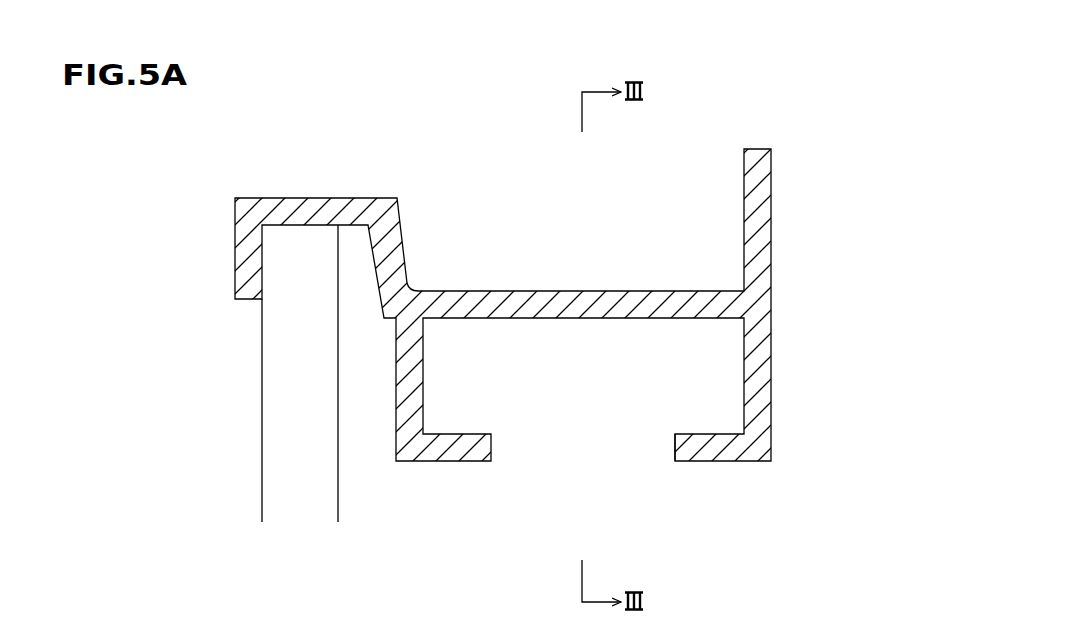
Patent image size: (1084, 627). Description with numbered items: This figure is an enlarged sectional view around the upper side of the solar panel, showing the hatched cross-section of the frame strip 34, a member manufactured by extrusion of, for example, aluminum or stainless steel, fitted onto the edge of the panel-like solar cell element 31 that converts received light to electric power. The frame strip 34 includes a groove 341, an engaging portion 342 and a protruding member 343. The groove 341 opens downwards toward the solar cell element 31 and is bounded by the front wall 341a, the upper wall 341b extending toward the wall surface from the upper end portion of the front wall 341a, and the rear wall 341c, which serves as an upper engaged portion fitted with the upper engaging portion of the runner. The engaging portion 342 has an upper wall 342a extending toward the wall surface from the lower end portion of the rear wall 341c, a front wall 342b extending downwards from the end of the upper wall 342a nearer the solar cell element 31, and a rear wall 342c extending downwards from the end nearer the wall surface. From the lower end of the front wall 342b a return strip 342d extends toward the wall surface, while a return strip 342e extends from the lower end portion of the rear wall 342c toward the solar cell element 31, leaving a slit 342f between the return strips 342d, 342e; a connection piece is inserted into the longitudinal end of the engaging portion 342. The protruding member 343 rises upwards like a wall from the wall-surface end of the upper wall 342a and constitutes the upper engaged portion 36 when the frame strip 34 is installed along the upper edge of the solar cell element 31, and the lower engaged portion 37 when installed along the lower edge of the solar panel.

The solar cell element 31 is at (282, 467).
The frame strip 34 is at (406, 215).
The groove 341 is at (313, 247).
The front wall 341a is at (247, 238).
The upper wall 341b is at (317, 210).
The rear wall 341c is at (397, 243).
The engaging portion 342 is at (631, 382).
The upper wall 342a is at (555, 305).
The front wall 342b is at (417, 367).
The rear wall 342c is at (764, 329).
The return strip 342d is at (448, 455).
The return strip 342e is at (712, 452).
The slit 342f is at (675, 443).
The protruding member 343 is at (838, 233).
The upper engaged portion 36 is at (838, 233).
The lower engaged portion 37 is at (774, 204).